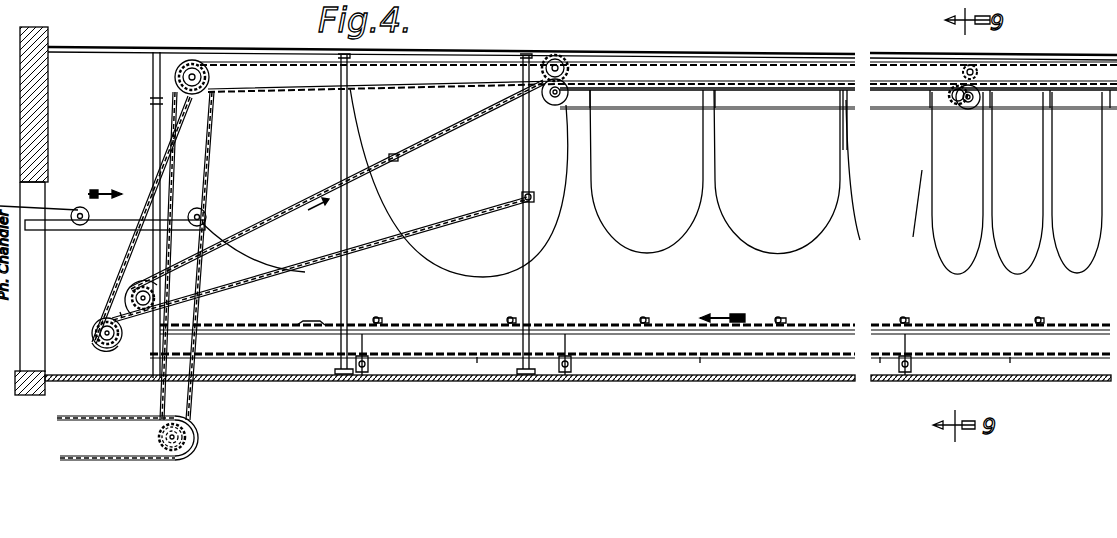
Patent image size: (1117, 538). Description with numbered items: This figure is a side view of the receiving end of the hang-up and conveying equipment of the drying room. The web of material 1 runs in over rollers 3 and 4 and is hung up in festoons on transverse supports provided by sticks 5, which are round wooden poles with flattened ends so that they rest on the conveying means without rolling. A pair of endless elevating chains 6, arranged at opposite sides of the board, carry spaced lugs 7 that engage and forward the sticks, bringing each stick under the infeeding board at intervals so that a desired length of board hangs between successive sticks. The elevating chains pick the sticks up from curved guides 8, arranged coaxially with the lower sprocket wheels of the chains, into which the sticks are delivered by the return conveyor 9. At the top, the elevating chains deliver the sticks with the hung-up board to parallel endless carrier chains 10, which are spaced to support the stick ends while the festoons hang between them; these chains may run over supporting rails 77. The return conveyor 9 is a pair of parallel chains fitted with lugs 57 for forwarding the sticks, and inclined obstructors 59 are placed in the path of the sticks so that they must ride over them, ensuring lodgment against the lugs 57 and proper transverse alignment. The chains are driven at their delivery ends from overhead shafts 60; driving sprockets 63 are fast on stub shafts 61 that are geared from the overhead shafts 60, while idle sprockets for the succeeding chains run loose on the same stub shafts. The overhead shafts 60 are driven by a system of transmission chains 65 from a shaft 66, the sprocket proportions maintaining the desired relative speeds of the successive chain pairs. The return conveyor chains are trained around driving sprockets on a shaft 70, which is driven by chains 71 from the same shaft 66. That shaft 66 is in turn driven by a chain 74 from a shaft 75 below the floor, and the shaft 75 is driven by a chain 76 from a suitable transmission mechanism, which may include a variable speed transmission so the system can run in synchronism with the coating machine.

The web of material 1 is at (62, 206).
The roller 3 is at (76, 207).
The roller 4 is at (206, 215).
The stick 5 is at (396, 154).
The endless elevating chain 6 is at (470, 125).
The lug 7 is at (390, 160).
The curved guide 8 is at (138, 286).
The return conveyor 9 is at (446, 324).
The endless carrier chain 10 is at (672, 109).
The lug 57 is at (792, 323).
The inclined obstructor 59 is at (310, 322).
The overhead shaft 60 is at (560, 57).
The stub shaft 61 is at (553, 104).
The driving sprocket 63 is at (957, 105).
The transmission chain 65 is at (270, 62).
The shaft 66 is at (196, 60).
The shaft 70 is at (94, 333).
The chain 71 is at (108, 283).
The chain 74 is at (192, 398).
The shaft 75 is at (180, 437).
The chain 76 is at (96, 416).
The supporting rail 77 is at (622, 91).